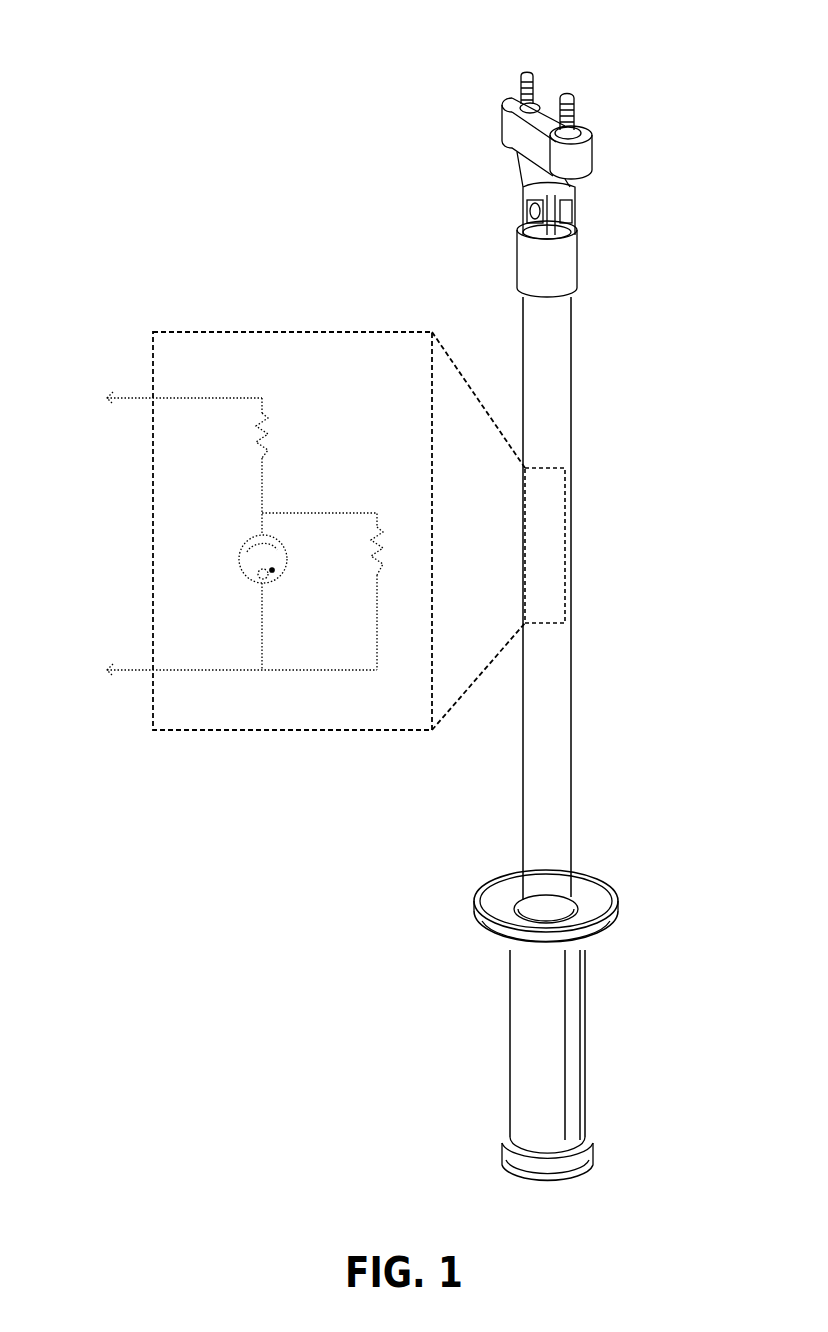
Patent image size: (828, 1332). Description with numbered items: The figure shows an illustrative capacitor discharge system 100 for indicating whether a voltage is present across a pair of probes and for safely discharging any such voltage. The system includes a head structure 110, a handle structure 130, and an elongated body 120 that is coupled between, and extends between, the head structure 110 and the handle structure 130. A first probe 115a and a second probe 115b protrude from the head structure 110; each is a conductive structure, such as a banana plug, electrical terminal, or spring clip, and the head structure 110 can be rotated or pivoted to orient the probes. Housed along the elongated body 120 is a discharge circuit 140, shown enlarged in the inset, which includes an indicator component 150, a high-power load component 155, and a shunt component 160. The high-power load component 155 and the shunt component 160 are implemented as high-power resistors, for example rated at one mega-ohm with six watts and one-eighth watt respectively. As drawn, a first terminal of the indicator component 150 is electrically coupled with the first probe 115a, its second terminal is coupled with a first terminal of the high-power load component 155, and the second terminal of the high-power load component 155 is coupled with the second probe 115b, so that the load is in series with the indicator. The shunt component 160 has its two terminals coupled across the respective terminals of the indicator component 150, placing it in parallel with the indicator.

The capacitor discharge system 100 is at (157, 110).
The head structure 110 is at (592, 152).
The first probe 115a is at (523, 72).
The second probe 115b is at (566, 93).
The elongated body 120 is at (570, 418).
The handle structure 130 is at (583, 1021).
The discharge circuit 140 is at (564, 558).
The indicator component 150 is at (254, 571).
The high-power load component 155 is at (241, 435).
The shunt component 160 is at (356, 551).